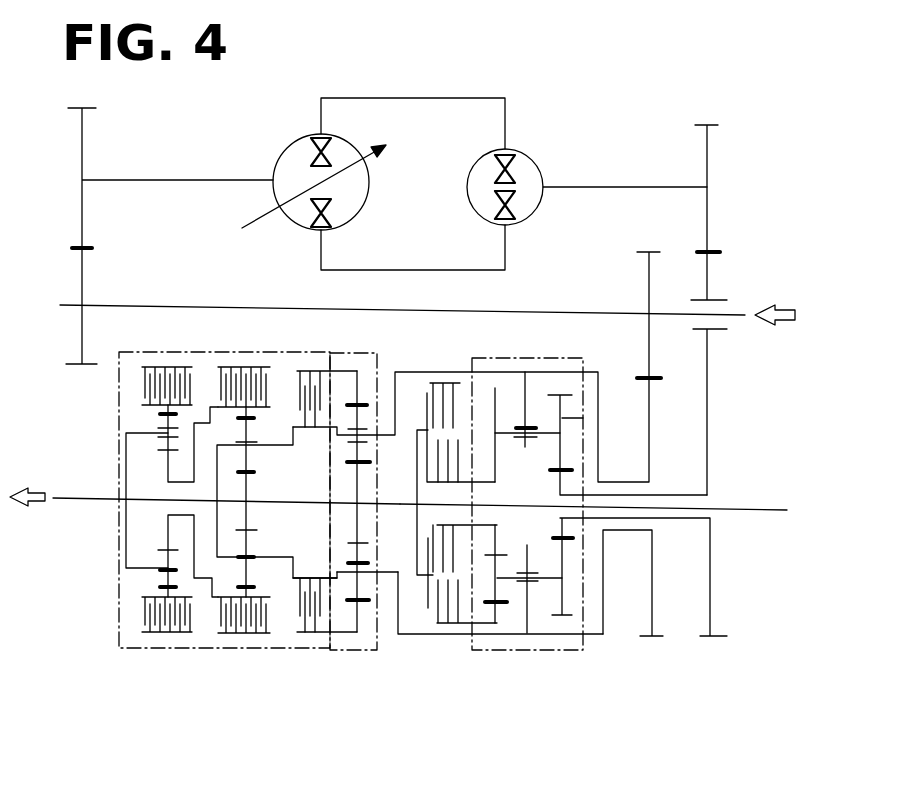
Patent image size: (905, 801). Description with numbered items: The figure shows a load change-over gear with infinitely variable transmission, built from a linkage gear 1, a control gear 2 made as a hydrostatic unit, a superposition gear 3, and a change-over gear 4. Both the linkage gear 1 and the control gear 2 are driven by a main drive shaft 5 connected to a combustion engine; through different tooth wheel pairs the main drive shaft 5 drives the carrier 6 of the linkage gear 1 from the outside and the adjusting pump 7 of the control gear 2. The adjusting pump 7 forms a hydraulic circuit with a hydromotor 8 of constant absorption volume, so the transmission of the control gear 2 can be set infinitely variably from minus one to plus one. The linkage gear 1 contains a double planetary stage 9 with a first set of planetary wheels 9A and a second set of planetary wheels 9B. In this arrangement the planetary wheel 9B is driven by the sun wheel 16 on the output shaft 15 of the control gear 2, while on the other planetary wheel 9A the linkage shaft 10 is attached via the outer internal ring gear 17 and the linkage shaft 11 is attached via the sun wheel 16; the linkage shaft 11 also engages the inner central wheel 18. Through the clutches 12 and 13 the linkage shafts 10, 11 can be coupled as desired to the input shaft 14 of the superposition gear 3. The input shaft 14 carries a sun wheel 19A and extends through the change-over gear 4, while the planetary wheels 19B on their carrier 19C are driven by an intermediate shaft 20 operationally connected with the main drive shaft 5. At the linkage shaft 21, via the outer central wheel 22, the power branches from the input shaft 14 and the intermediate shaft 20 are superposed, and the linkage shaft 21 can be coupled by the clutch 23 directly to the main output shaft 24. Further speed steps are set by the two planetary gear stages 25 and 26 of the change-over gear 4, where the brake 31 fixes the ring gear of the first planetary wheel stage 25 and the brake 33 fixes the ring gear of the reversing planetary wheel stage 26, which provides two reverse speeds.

The linkage gear 1 is at (536, 350).
The control gear 2 is at (448, 88).
The superposition gear 3 is at (352, 348).
The change-over gear 4 is at (162, 347).
The main drive shaft 5 is at (736, 313).
The carrier 6 is at (530, 605).
The adjusting pump 7 is at (298, 168).
The hydromotor 8 is at (528, 174).
The double planetary stage 9 is at (516, 430).
The first set of planetary wheels 9A is at (495, 420).
The second set of planetary wheels 9B is at (583, 418).
The first linkage shaft 10 is at (482, 385).
The second linkage shaft 11 is at (483, 520).
The clutch 12 is at (433, 623).
The clutch 13 is at (448, 462).
The input shaft 14 is at (397, 498).
The output shaft 15 is at (624, 186).
The sun wheel 16 is at (602, 528).
The outer internal ring gear 17 is at (497, 608).
The inner central wheel 18 is at (496, 454).
The sun wheel 19A is at (357, 493).
The planetary wheels 19B is at (357, 557).
The carrier 19C is at (384, 568).
The intermediate shaft 20 is at (397, 605).
The linkage shaft 21 is at (340, 654).
The outer central wheel 22 is at (358, 400).
The clutch 23 is at (307, 617).
The main output shaft 24 is at (95, 502).
The first planetary wheel stage 25 is at (233, 656).
The planetary wheel stage 26 is at (161, 654).
The brake 31 is at (258, 618).
The brake 33 is at (155, 618).